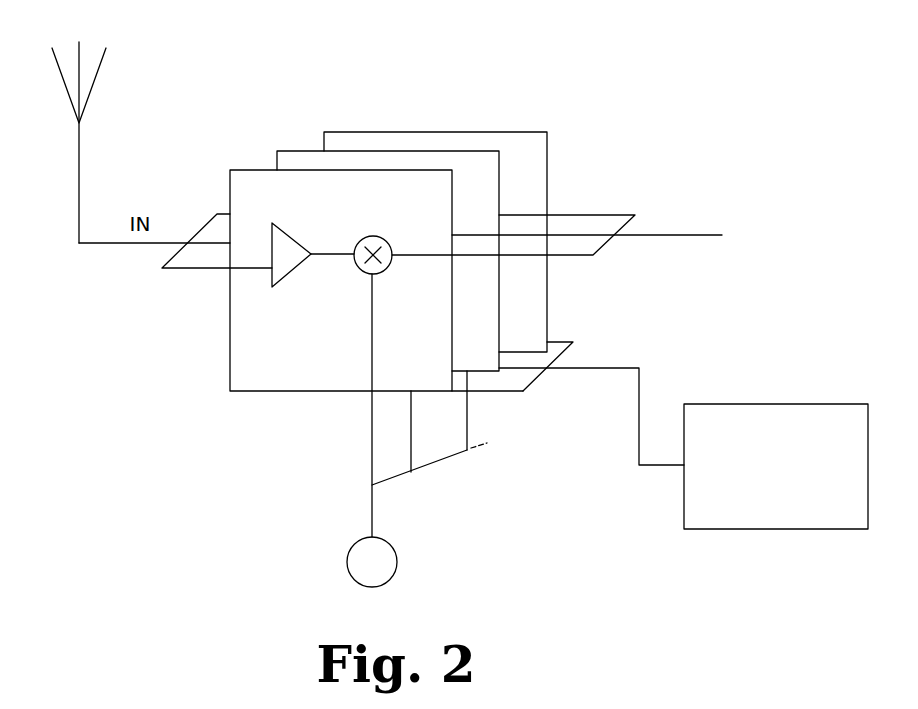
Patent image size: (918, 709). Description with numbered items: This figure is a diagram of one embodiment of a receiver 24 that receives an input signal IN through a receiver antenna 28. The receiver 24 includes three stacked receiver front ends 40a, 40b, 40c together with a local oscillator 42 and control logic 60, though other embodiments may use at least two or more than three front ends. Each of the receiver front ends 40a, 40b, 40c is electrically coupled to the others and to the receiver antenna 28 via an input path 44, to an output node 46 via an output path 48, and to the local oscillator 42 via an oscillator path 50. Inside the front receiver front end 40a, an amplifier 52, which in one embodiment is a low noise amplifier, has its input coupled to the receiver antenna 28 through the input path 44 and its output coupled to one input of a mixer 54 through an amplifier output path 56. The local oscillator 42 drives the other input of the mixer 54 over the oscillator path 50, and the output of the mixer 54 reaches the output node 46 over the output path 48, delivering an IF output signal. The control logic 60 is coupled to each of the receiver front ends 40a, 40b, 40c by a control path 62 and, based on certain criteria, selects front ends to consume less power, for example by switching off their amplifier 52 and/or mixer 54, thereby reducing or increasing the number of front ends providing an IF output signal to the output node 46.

The receiver 24 is at (626, 66).
The receiver antenna 28 is at (79, 197).
The receiver front end 40a is at (297, 178).
The receiver front end 40b is at (358, 160).
The receiver front end 40c is at (430, 140).
The local oscillator 42 is at (395, 545).
The input path 44 is at (162, 269).
The output node 46 is at (680, 237).
The output path 48 is at (593, 256).
The oscillator path 50 is at (372, 485).
The amplifier 52 is at (282, 272).
The mixer 54 is at (373, 236).
The amplifier output path 56 is at (340, 252).
The control logic 60 is at (763, 404).
The control path 62 is at (640, 368).